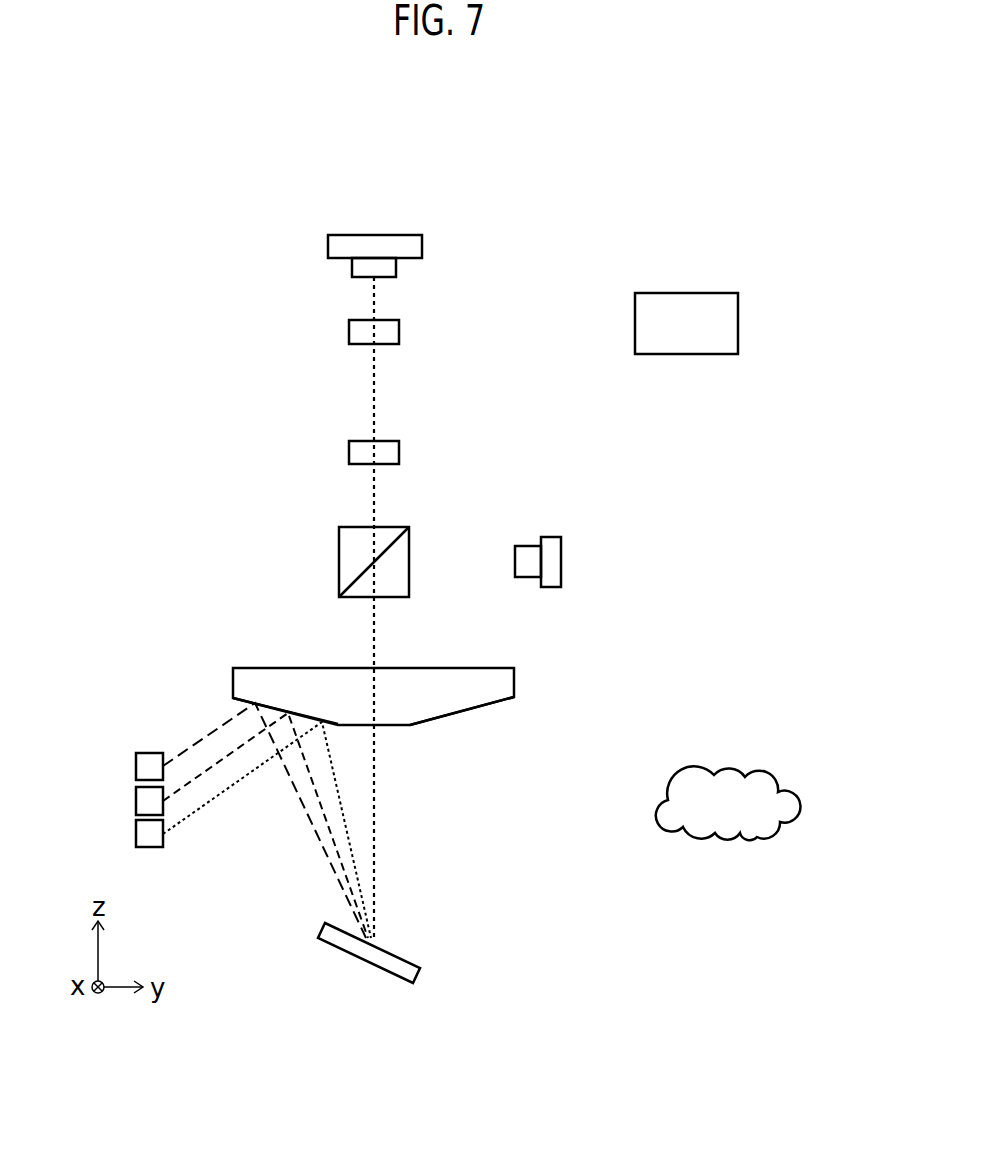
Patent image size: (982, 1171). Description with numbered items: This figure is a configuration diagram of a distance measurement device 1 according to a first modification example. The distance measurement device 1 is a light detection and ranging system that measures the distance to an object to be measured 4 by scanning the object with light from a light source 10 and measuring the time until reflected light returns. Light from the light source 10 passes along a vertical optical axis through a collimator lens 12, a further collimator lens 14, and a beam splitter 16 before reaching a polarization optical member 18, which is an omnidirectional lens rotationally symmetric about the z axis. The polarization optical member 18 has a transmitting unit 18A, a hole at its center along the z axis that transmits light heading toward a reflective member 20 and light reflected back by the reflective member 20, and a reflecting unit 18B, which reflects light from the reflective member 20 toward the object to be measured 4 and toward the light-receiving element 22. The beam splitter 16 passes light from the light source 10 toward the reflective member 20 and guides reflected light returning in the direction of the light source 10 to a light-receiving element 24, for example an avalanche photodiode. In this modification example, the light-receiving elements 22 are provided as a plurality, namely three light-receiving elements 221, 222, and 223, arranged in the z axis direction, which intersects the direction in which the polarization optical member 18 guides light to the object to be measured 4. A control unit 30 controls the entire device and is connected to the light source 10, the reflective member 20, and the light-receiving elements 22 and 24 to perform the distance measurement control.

The distance measurement device 1 is at (727, 198).
The object to be measured 4 is at (766, 770).
The light source 10 is at (328, 245).
The collimator lens 12 is at (349, 332).
The collimator lens 14 is at (349, 450).
The beam splitter 16 is at (339, 560).
The polarization optical member 18 is at (233, 680).
The transmitting unit 18A is at (343, 705).
The reflecting unit 18B is at (468, 708).
The reflective member 20 is at (337, 947).
The light-receiving element 22 is at (218, 820).
The light-receiving element 221 is at (136, 838).
The light-receiving element 222 is at (136, 804).
The light-receiving element 223 is at (136, 770).
The light-receiving element 24 is at (553, 537).
The control unit 30 is at (715, 293).